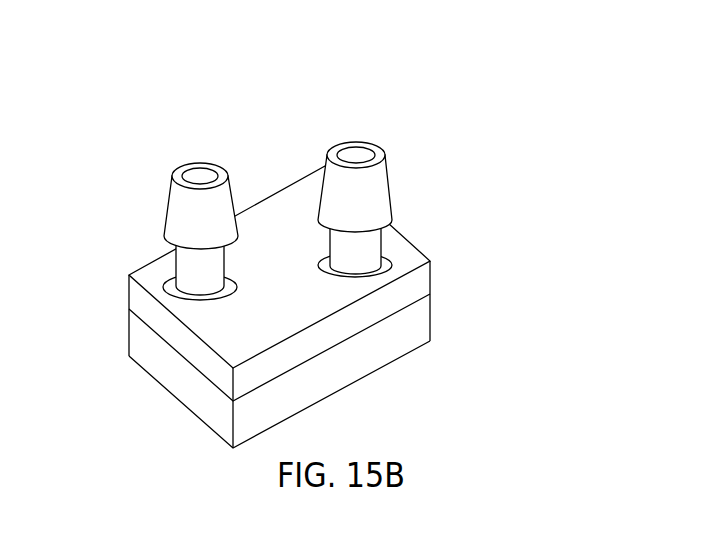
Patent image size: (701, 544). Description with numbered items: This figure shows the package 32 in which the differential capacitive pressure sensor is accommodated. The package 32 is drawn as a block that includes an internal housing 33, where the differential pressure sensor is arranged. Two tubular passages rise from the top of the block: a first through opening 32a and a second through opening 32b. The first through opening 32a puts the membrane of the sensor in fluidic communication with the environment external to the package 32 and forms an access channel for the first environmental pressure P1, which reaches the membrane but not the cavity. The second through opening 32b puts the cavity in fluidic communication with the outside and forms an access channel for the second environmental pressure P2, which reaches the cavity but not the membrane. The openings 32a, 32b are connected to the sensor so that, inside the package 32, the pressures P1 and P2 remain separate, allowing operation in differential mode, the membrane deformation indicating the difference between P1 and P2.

The package 32 is at (100, 284).
The first through opening 32a is at (223, 168).
The second through opening 32b is at (388, 199).
The internal housing 33 is at (158, 323).
The first environmental pressure P1 is at (200, 146).
The second environmental pressure P2 is at (358, 125).